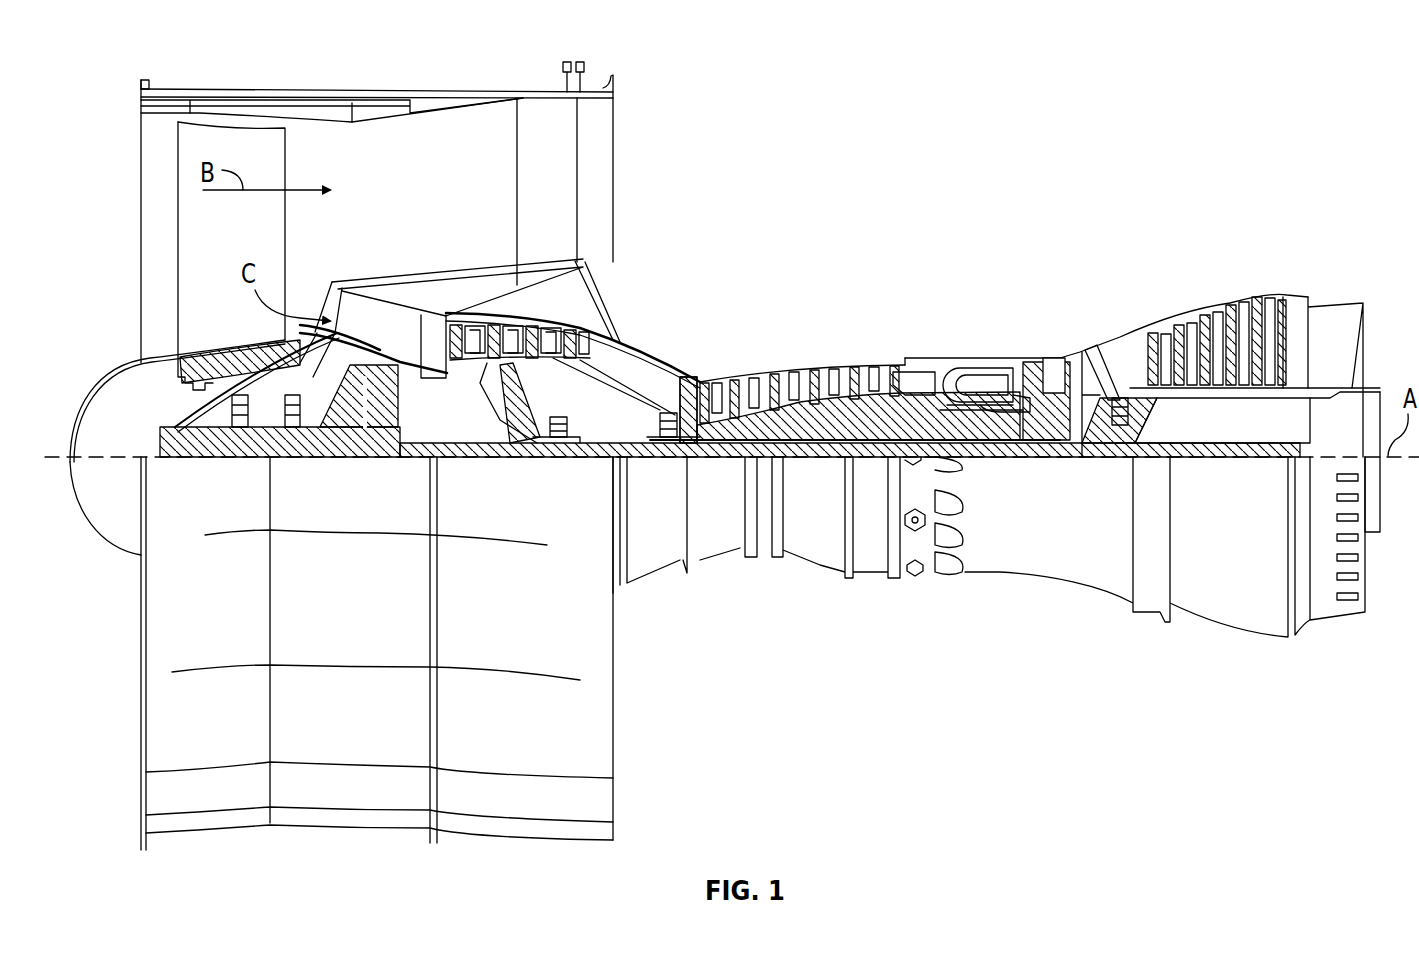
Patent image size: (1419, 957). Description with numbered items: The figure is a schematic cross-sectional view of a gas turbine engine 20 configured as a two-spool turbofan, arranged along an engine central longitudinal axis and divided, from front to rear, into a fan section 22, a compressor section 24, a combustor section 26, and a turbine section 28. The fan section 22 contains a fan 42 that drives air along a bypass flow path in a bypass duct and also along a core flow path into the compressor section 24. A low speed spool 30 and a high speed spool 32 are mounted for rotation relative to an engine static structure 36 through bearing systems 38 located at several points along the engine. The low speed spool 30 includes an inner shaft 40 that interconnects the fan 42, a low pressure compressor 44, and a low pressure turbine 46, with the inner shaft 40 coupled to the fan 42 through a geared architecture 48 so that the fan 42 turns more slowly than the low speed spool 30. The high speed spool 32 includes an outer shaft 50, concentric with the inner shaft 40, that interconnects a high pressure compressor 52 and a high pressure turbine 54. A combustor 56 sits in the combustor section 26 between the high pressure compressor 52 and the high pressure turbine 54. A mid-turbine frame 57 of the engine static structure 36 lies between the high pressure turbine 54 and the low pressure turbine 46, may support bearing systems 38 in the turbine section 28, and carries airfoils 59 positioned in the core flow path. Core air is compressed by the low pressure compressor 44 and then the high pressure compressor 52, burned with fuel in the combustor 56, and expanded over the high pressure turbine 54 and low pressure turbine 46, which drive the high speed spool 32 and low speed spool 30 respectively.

The gas turbine engine 20 is at (1190, 126).
The fan section 22 is at (246, 76).
The compressor section 24 is at (683, 355).
The combustor section 26 is at (966, 320).
The turbine section 28 is at (1095, 262).
The low speed spool 30 is at (836, 460).
The high speed spool 32 is at (908, 370).
The engine static structure 36 is at (875, 582).
The bearing systems 38 is at (558, 442).
The inner shaft 40 is at (630, 462).
The fan 42 is at (244, 236).
The low pressure compressor 44 is at (530, 340).
The low pressure turbine 46 is at (1218, 318).
The geared architecture 48 is at (380, 432).
The outer shaft 50 is at (993, 457).
The high pressure compressor 52 is at (785, 370).
The high pressure turbine 54 is at (1055, 358).
The combustor 56 is at (390, 96).
The mid-turbine frame 57 is at (1108, 347).
The airfoils 59 is at (1165, 405).